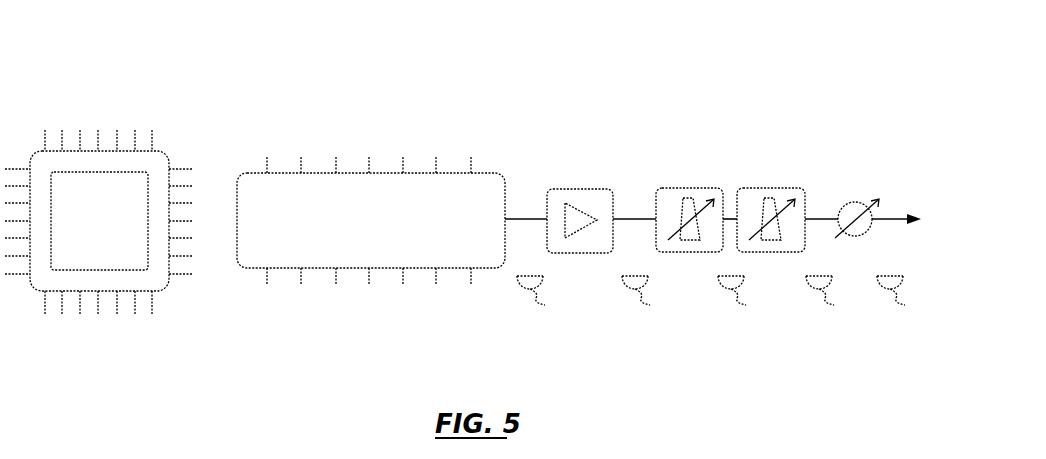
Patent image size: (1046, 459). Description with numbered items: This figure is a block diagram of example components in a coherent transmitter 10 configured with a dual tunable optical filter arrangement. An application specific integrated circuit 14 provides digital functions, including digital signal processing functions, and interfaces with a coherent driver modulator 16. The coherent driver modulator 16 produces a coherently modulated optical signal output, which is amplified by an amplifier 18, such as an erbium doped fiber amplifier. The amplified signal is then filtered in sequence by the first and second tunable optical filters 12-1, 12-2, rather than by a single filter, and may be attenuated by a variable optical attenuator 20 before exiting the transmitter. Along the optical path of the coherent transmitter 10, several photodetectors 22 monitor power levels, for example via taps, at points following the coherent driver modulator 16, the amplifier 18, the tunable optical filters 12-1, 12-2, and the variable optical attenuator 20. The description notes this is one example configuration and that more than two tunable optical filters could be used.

The coherent transmitter 10 is at (501, 58).
The application specific integrated circuit 14 is at (163, 150).
The coherent driver modulator 16 is at (503, 183).
The amplifier 18 is at (615, 190).
The tunable optical filter 12-1 is at (723, 188).
The tunable optical filter 12-2 is at (805, 188).
The variable optical attenuator 20 is at (860, 230).
The photodetectors 22 is at (769, 343).